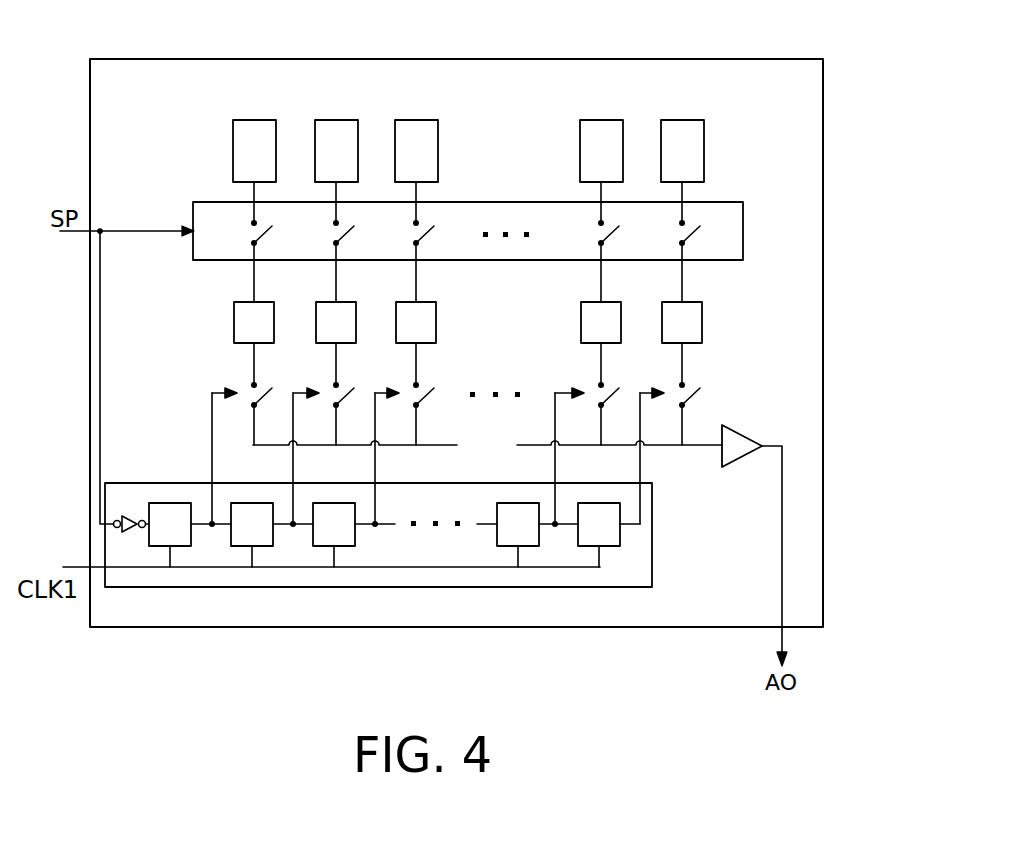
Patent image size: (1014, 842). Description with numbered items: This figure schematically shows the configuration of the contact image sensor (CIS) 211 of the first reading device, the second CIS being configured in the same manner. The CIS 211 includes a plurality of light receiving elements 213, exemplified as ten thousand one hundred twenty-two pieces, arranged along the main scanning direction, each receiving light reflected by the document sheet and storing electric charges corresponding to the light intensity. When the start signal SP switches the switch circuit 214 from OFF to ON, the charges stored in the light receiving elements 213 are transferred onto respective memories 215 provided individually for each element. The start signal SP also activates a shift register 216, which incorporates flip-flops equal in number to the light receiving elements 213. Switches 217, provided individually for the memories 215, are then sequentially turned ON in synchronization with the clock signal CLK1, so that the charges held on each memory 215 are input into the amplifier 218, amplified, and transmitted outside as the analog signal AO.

The contact image sensor (CIS) 211 is at (693, 58).
The light receiving elements 213 is at (704, 150).
The switch circuit 214 is at (745, 222).
The memories 215 is at (438, 318).
The shift register 216 is at (538, 587).
The switches 217 is at (707, 383).
The amplifier 218 is at (748, 432).